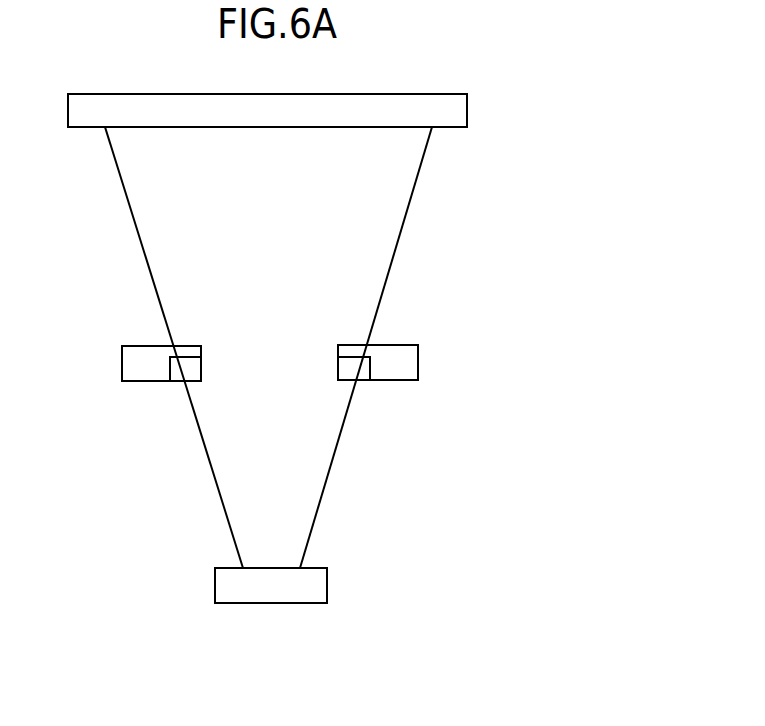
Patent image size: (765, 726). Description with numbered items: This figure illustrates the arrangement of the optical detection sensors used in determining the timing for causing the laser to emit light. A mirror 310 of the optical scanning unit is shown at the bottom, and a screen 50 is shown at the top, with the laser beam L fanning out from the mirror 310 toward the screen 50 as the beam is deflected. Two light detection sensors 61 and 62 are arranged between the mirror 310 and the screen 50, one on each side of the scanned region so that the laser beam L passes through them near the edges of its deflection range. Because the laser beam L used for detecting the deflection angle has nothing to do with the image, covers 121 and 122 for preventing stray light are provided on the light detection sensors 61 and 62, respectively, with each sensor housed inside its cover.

The screen 50 is at (467, 108).
The laser beam L is at (385, 244).
The cover 122 is at (122, 360).
The light detection sensor 62 is at (174, 368).
The cover 121 is at (418, 361).
The light detection sensor 61 is at (365, 365).
The mirror 310 is at (327, 585).